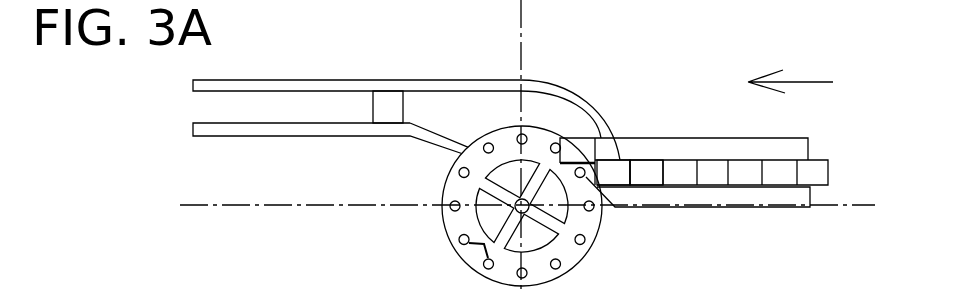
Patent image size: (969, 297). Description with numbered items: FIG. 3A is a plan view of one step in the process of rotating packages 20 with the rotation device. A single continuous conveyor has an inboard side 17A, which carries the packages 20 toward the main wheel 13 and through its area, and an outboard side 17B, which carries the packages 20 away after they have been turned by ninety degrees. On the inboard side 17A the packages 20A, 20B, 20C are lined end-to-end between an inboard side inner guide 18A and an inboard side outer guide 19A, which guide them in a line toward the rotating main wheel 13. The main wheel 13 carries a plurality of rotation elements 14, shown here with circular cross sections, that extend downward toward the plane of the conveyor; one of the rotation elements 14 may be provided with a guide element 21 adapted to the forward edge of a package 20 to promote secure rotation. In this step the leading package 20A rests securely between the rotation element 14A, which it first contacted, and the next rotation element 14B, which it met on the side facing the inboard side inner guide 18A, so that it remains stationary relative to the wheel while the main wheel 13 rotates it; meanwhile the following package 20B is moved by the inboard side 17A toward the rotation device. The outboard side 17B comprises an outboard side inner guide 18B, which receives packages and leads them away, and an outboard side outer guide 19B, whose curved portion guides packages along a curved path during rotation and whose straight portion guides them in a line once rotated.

The main wheel 13 is at (442, 215).
The rotation elements 14 is at (563, 263).
The rotation element 14A is at (557, 142).
The rotation element 14B is at (590, 183).
The inboard side of the conveyor 17A is at (824, 150).
The outboard side of the conveyor 17B is at (293, 107).
The inboard side inner guide 18A is at (712, 196).
The outboard side inner guide 18B is at (243, 132).
The inboard side outer guide 19A is at (735, 150).
The outboard side outer guide 19B is at (527, 85).
The package 20 is at (390, 118).
The package 20A is at (590, 143).
The package 20B is at (618, 176).
The package 20C is at (650, 177).
The guide element 21 is at (473, 252).